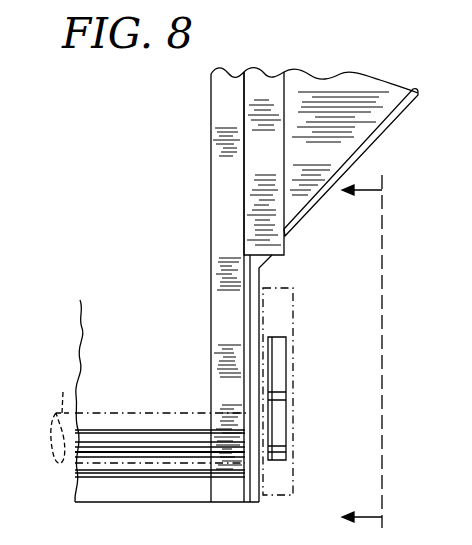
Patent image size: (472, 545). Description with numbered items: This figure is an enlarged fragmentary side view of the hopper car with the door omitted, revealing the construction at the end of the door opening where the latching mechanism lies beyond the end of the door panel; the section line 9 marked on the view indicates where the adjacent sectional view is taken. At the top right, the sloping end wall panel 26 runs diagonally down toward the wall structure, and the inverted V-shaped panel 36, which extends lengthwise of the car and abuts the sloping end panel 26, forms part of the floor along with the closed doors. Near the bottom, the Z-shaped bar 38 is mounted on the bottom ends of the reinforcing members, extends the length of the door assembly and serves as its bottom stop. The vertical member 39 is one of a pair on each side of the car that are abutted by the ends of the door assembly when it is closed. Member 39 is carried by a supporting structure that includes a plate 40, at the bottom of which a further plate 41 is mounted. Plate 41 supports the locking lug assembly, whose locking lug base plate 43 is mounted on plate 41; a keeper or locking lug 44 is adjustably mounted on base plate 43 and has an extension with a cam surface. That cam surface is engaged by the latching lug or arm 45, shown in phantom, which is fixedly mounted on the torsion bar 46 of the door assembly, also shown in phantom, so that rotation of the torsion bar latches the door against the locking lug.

The sloping end wall panel 26 is at (404, 118).
The inverted V-shaped panel 36 is at (90, 345).
The Z-shaped bar 38 is at (158, 490).
The member 39 is at (212, 242).
The plate 40 is at (375, 106).
The plate 41 is at (266, 280).
The locking lug base plate 43 is at (268, 368).
The keeper or locking lug 44 is at (282, 397).
The latching lug or arm 45 is at (293, 305).
The torsion bar 46 is at (55, 417).
The section line 9- 9 is at (375, 354).